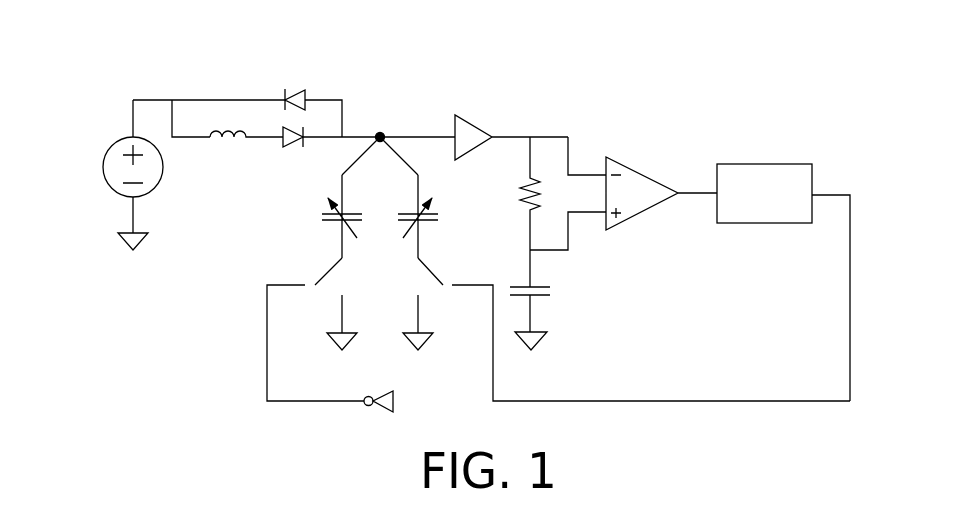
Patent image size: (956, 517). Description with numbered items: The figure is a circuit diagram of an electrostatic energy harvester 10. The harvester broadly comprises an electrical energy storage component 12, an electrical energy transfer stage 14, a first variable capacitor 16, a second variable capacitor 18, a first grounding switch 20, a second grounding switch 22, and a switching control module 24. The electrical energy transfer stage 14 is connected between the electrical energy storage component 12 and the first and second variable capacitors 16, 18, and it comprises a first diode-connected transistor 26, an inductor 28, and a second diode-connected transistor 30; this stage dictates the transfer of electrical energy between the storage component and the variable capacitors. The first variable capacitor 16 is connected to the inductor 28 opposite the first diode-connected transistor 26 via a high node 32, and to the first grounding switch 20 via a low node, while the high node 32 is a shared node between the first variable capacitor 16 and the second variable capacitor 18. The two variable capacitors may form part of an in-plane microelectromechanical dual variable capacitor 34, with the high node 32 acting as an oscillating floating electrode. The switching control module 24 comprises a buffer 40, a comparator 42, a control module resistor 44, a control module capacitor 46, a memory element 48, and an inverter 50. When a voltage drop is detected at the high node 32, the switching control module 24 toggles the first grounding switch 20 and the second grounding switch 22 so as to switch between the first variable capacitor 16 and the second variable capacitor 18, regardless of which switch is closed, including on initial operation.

The electrostatic energy harvester 10 is at (587, 54).
The electrical energy storage component 12 is at (103, 188).
The electrical energy transfer stage 14 is at (241, 63).
The first variable capacitor 16 is at (446, 216).
The second variable capacitor 18 is at (317, 215).
The first grounding switch 20 is at (424, 289).
The second grounding switch 22 is at (332, 289).
The switching control module 24 is at (636, 117).
The first diode-connected transistor 26 is at (293, 145).
The inductor 28 is at (230, 145).
The second diode-connected transistor 30 is at (293, 86).
The high node 32 is at (380, 123).
The in-plane microelectromechanical dual variable capacitor 34 is at (258, 228).
The buffer 40 is at (481, 111).
The comparator 42 is at (656, 157).
The control module resistor 44 is at (516, 188).
The control module capacitor 46 is at (556, 292).
The memory element 48 is at (773, 164).
The inverter 50 is at (378, 409).